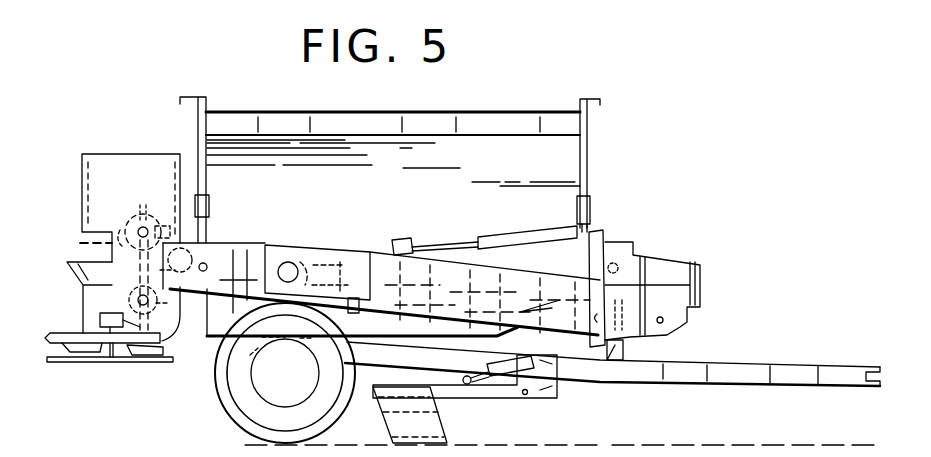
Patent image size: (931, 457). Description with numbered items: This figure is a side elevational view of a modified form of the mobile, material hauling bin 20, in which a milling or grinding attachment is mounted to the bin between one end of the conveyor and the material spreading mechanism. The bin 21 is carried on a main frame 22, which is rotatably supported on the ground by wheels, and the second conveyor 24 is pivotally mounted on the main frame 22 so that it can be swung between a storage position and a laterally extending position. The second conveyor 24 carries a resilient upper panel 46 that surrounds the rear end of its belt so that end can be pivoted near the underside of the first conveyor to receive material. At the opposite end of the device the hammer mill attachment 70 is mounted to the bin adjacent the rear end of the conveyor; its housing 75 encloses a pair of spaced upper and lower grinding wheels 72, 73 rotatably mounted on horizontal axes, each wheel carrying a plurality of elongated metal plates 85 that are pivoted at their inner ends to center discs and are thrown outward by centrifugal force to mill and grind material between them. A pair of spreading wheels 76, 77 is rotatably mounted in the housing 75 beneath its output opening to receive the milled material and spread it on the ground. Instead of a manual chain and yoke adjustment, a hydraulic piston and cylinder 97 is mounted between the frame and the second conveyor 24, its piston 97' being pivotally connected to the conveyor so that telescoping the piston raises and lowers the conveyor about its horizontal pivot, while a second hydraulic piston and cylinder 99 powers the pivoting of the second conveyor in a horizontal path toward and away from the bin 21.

The mobile material hauling bin 20 is at (528, 79).
The bin 21 is at (465, 112).
The main frame 22 is at (757, 362).
The second conveyor 24 is at (298, 243).
The resilient upper panel 46 is at (683, 258).
The hammer mill attachment 70 is at (70, 300).
The upper grinding wheel 72 is at (73, 246).
The lower grinding wheel 73 is at (168, 331).
The housing 75 is at (90, 174).
The spreading wheel 76 is at (76, 364).
The spreading wheel 77 is at (200, 388).
The elongated metal plates 85 is at (140, 215).
The hydraulic piston and cylinder 97 is at (494, 223).
The piston 97' is at (425, 229).
The second hydraulic piston and cylinder 99 is at (609, 229).